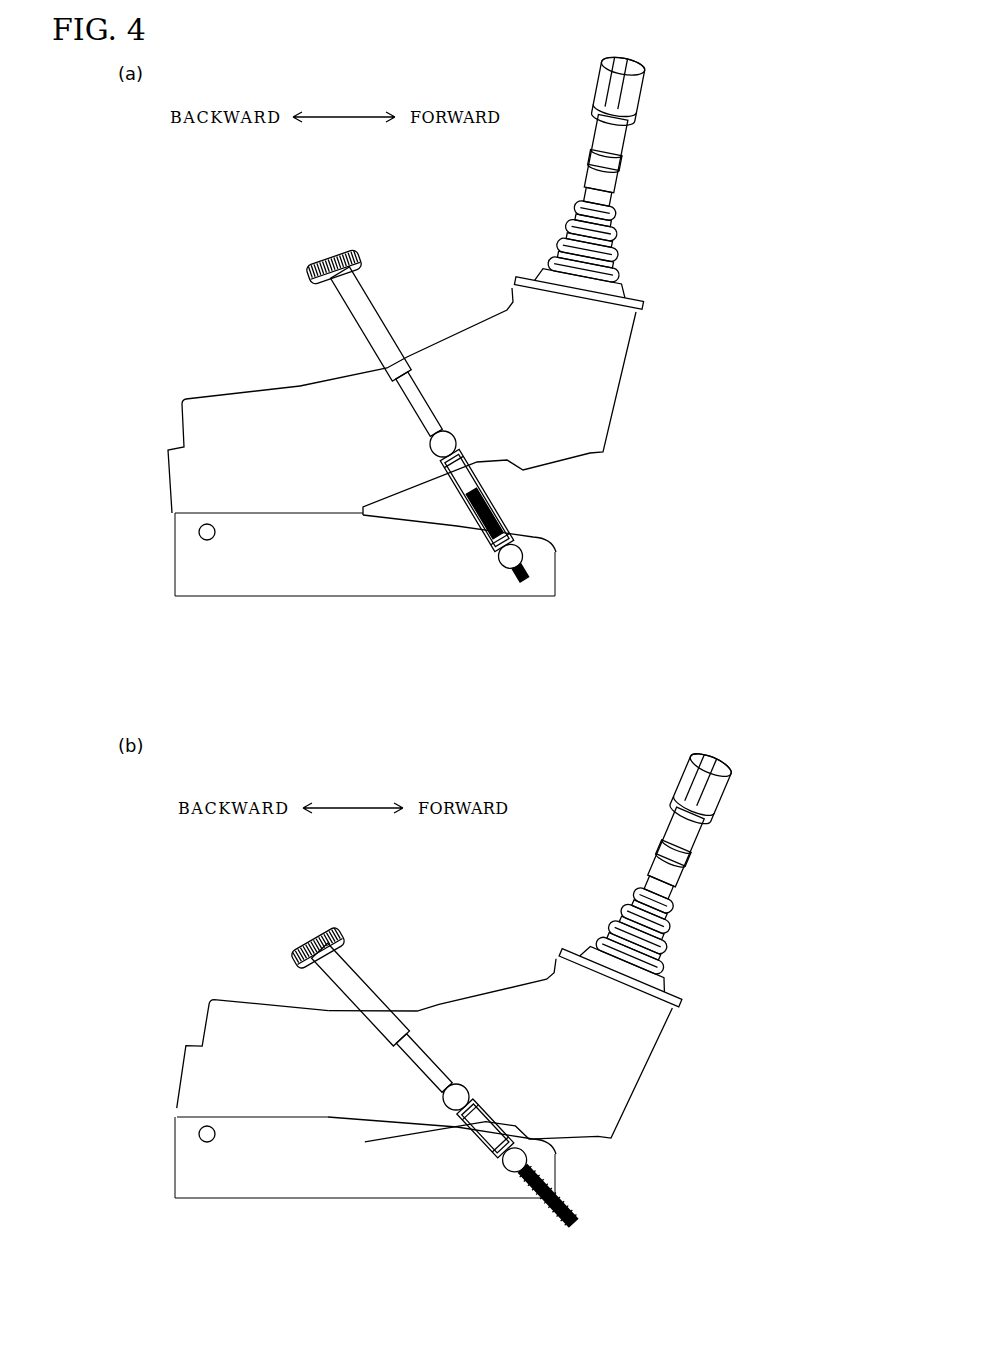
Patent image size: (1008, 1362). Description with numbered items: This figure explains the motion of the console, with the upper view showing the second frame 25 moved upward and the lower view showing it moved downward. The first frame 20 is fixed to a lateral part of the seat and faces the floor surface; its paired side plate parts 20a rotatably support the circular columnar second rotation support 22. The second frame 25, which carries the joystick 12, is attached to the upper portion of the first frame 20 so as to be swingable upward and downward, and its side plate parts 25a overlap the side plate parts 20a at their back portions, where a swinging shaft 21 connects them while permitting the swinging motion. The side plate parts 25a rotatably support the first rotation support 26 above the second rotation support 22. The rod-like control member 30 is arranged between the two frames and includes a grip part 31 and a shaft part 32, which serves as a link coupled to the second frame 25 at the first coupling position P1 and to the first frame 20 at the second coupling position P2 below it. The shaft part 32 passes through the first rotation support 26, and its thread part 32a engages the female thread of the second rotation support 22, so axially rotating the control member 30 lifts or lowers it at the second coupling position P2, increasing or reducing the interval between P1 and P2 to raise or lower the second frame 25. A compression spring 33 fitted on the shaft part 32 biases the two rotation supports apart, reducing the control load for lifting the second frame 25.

The joystick operation lever 12 is at (631, 138).
The first frame 20 is at (388, 875).
The side plate part 20a is at (548, 557).
The swinging shaft 21 is at (199, 534).
The second rotation support 22 is at (524, 551).
The second frame 25 is at (462, 743).
The side plate part 25a is at (208, 392).
The first rotation support 26 is at (457, 436).
The control member 30 is at (481, 733).
The grip part 31 is at (361, 251).
The shaft part 32 is at (403, 408).
The thread part 32a is at (507, 521).
The compression spring 33 is at (484, 492).
The first coupling position P1 is at (418, 458).
The second coupling position P2 is at (490, 573).